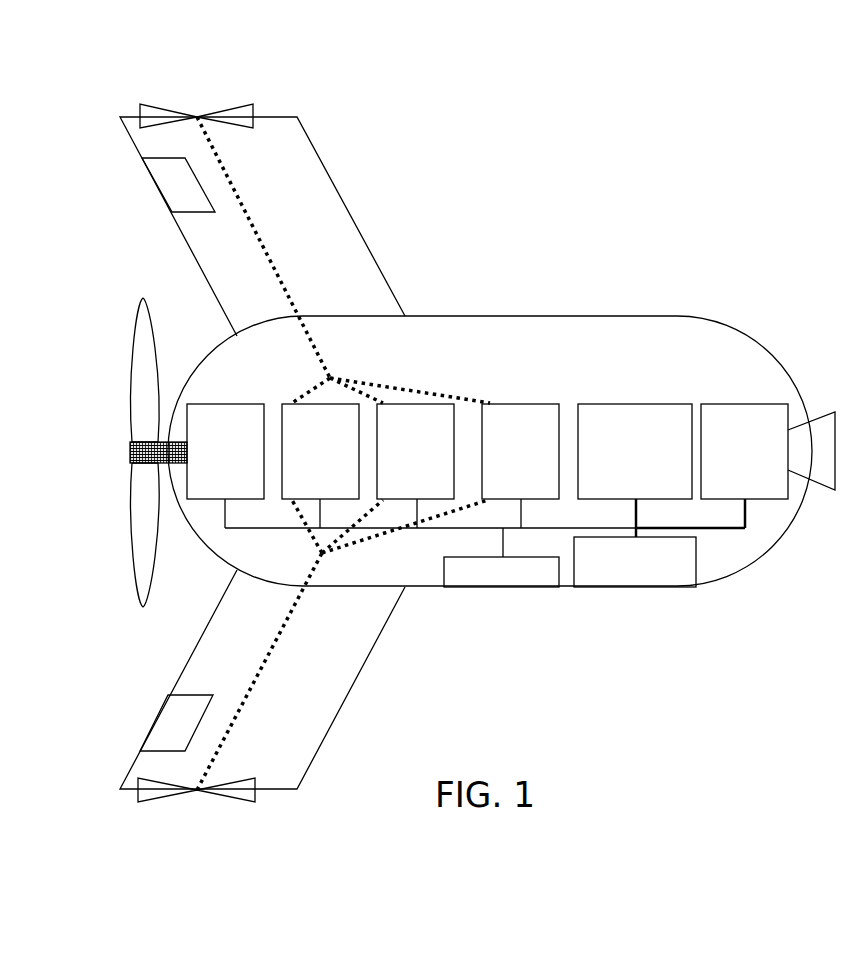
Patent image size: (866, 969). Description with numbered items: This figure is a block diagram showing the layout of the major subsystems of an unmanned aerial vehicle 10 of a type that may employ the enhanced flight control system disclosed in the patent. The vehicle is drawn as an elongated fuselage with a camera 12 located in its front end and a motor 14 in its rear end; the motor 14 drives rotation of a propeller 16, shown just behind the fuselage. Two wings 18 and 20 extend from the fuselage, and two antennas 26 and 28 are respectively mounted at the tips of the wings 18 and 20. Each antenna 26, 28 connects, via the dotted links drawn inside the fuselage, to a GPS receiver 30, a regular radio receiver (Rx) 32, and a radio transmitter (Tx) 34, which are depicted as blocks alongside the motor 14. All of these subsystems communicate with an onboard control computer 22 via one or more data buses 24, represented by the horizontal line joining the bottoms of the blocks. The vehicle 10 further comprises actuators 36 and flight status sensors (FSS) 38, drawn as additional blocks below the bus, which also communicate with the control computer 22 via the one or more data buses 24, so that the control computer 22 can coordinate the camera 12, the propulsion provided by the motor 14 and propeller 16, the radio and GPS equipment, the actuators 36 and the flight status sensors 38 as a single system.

The unmanned aerial vehicle 10 is at (624, 252).
The camera 12 is at (745, 404).
The motor 14 is at (247, 403).
The propeller 16 is at (133, 547).
The wing 18 is at (378, 262).
The wing 20 is at (313, 760).
The control computer 22 is at (638, 404).
The data bus 24 is at (712, 528).
The antenna 26 is at (197, 117).
The antenna 28 is at (207, 795).
The GPS receiver 30 is at (320, 404).
The radio receiver (Rx) 32 is at (415, 404).
The radio transmitter (Tx) 34 is at (522, 404).
The actuators 36 is at (502, 588).
The flight status sensors (FSS) 38 is at (637, 588).